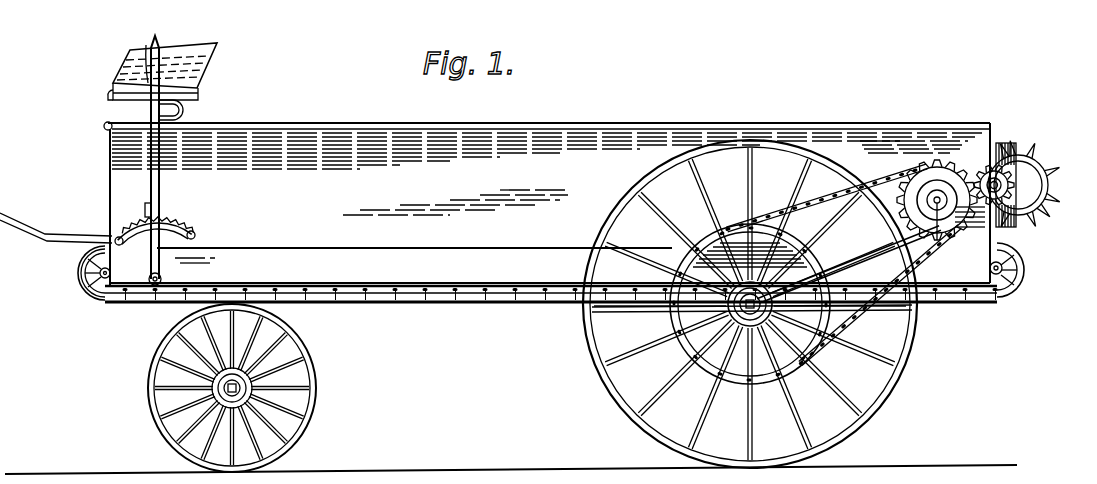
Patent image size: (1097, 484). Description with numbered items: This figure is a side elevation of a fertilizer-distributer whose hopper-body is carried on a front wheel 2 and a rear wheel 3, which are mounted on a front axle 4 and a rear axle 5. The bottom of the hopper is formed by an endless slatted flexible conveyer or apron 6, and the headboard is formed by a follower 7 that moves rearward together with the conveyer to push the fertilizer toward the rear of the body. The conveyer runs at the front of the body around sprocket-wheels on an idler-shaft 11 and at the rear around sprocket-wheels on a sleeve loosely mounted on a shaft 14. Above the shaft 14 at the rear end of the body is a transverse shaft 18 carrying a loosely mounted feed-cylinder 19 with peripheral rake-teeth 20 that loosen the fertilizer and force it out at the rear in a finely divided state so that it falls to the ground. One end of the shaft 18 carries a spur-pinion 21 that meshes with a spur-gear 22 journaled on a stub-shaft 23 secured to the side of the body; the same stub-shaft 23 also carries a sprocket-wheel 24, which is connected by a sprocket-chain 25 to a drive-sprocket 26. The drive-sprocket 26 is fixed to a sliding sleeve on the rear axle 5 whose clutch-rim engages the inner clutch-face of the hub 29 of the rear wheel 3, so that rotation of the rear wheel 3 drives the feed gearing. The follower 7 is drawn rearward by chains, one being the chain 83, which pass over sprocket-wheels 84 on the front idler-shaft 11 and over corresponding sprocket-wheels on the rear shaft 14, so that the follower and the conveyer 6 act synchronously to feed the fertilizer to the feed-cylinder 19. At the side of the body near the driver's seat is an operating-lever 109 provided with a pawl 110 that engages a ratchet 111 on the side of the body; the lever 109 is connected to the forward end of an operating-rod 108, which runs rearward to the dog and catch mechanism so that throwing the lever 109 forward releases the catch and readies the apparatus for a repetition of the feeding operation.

The front wheel 2 is at (312, 380).
The rear wheel 3 is at (897, 368).
The front axle 4 is at (252, 372).
The rear axle 5 is at (686, 352).
The endless slatted flexible conveyer or apron 6 is at (507, 293).
The follower 7 is at (420, 207).
The idler-shaft 11 is at (90, 298).
The shaft 14 is at (1007, 288).
The transverse shaft 18 is at (1020, 167).
The feed-cylinder 19 is at (1036, 178).
The rake-teeth 20 is at (1008, 134).
The spur-pinion 21 is at (1036, 198).
The spur-gear 22 is at (984, 207).
The stub-shaft 23 is at (942, 242).
The sprocket-wheel 24 is at (904, 178).
The sprocket-chain 25 is at (780, 208).
The drive-sprocket 26 is at (812, 270).
The hub 29 is at (723, 370).
The chain 83 is at (1013, 273).
The sprocket-wheels 84 is at (97, 303).
The operating-rod 108 is at (510, 243).
The operating-lever 109 is at (160, 212).
The pawl 110 is at (145, 213).
The ratchet 111 is at (187, 233).